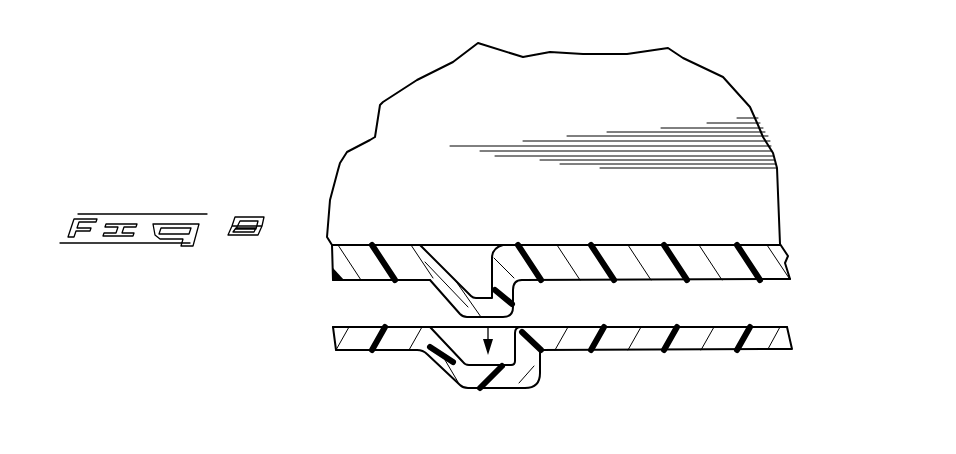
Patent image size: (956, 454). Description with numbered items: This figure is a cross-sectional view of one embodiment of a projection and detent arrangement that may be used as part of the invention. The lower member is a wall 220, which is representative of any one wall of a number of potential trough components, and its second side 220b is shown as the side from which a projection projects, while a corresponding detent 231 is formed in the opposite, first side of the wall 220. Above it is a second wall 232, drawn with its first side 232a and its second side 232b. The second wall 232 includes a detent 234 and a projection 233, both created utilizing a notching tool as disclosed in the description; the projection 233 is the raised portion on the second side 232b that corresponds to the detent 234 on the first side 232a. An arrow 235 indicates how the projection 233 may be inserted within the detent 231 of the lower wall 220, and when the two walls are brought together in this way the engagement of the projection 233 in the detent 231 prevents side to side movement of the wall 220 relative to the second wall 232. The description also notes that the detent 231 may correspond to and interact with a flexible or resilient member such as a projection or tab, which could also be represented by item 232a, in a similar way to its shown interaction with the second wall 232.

The wall 220 is at (692, 343).
The second side of wall 220b is at (748, 319).
The detent 231 is at (468, 349).
The second wall 232 is at (608, 246).
The first side of second wall 232a is at (448, 231).
The second side of second wall 232b is at (860, 308).
The projection 233 is at (563, 308).
The detent 234 is at (477, 272).
The arrow 235 is at (480, 334).